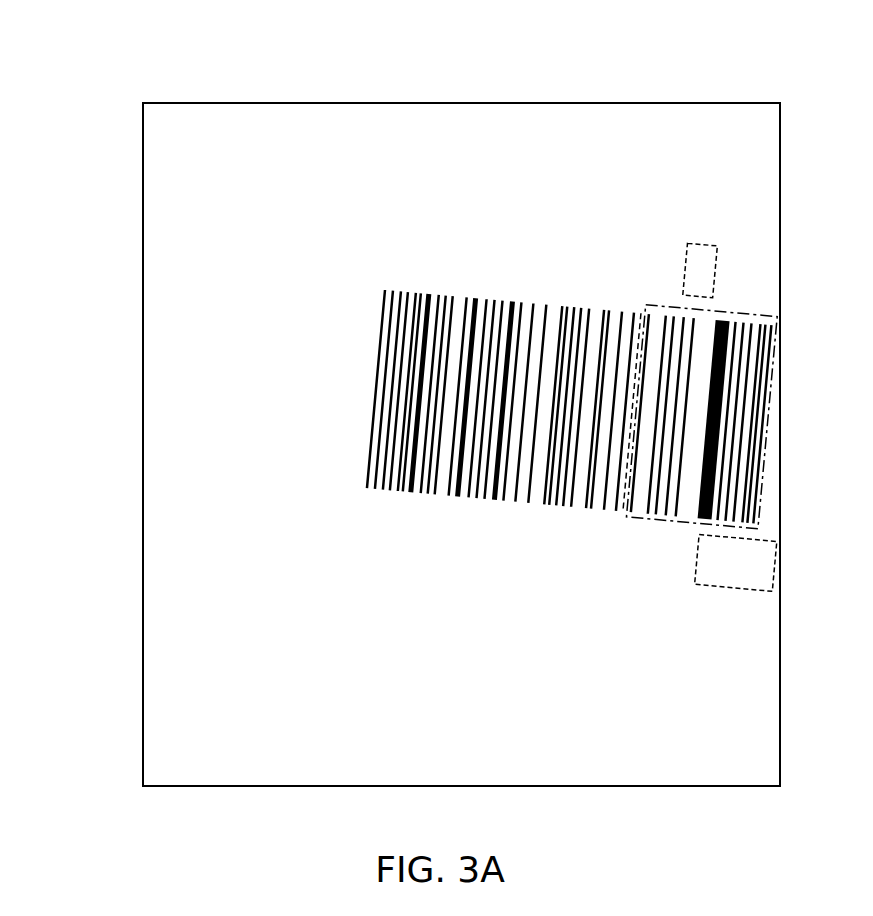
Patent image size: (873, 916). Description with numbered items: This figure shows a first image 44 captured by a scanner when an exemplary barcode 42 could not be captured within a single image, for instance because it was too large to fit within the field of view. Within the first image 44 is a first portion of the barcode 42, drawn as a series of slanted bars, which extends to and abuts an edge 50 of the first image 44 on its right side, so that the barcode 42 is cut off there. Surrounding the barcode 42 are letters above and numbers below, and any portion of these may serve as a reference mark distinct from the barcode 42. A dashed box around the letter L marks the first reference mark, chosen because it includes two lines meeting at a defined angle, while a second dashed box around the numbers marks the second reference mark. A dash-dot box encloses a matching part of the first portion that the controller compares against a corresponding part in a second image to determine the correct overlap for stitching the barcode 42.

The first image 44 is at (76, 52).
The barcode 42 is at (276, 195).
The edge 50 is at (780, 423).